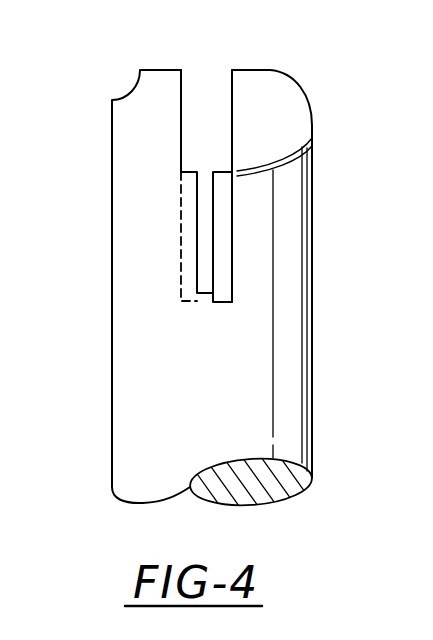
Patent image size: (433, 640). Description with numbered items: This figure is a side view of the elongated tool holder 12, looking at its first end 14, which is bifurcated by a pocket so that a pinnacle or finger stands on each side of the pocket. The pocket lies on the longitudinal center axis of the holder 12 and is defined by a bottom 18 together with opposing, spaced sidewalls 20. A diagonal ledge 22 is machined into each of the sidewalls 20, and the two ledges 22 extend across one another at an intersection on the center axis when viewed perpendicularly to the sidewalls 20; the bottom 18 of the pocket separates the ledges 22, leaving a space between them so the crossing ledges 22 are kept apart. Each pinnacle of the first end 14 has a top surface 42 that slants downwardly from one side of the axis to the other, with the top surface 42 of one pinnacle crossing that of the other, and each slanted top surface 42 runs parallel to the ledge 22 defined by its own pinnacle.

The tool holder 12 is at (189, 260).
The first end 14 is at (110, 320).
The bottom 18 is at (203, 292).
The sidewalls 20 is at (230, 100).
The diagonal ledge 22 is at (223, 189).
The top surface 42 is at (290, 88).